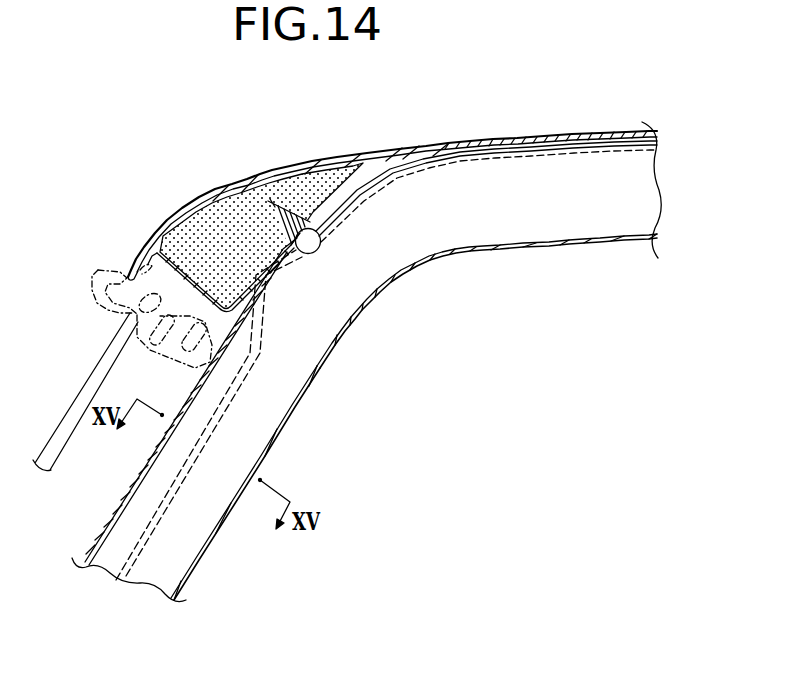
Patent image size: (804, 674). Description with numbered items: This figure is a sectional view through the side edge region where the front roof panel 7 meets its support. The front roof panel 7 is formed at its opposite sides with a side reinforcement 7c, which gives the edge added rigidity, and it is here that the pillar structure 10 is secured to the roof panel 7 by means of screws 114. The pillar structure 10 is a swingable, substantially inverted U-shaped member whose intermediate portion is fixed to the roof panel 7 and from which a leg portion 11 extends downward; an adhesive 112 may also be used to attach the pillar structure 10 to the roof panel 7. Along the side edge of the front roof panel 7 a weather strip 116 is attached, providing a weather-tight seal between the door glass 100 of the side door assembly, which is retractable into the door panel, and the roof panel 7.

The front roof panel 7 is at (414, 144).
The side reinforcement 7c is at (233, 192).
The pillar structure 10 is at (511, 254).
The leg portion 11 is at (206, 548).
The door glass 100 is at (99, 357).
The adhesive 112 is at (565, 138).
The screw 114 is at (321, 236).
The weather strip 116 is at (110, 283).